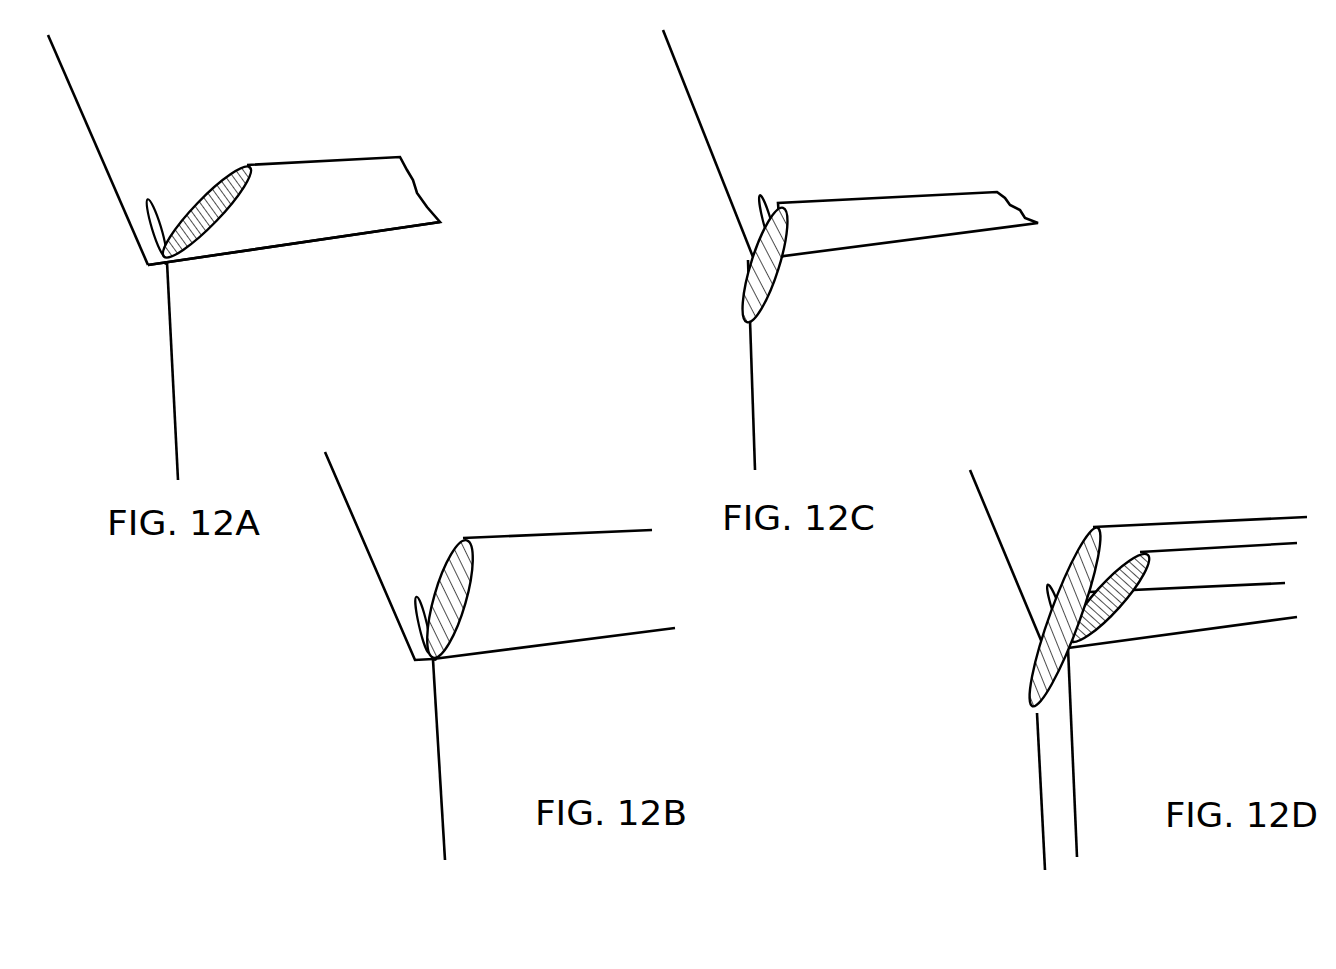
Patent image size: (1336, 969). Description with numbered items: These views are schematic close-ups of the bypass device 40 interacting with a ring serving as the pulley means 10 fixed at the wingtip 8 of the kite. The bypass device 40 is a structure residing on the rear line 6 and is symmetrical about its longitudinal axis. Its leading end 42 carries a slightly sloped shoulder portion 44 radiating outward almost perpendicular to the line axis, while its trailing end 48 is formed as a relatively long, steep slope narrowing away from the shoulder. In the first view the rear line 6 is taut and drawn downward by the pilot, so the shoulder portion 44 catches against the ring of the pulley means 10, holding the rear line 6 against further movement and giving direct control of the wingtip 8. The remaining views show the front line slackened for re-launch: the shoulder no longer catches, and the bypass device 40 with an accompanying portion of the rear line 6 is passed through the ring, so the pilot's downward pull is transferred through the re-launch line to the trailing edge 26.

In FIG. 12A, the rear line 6 is at (318, 157).
In FIG. 12A, the wingtip 8 is at (367, 235).
In FIG. 12A, the pulley means 10 is at (148, 200).
In FIG. 12A, the trailing edge 26 is at (90, 132).
In FIG. 12A, the bypass device 40 is at (198, 238).
In FIG. 12A, the leading end 42 is at (168, 263).
In FIG. 12B, the shoulder portion 44 is at (440, 658).
In FIG. 12B, the trailing end 48 is at (467, 577).